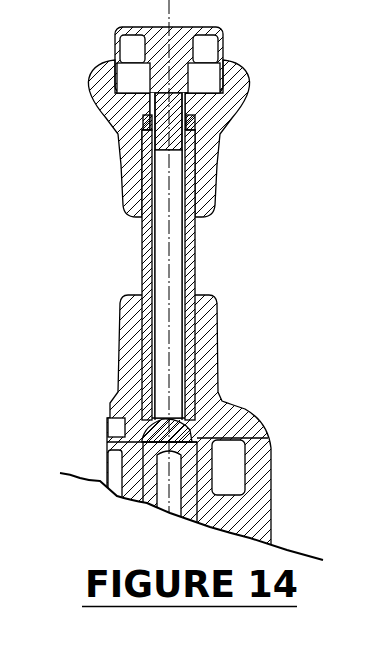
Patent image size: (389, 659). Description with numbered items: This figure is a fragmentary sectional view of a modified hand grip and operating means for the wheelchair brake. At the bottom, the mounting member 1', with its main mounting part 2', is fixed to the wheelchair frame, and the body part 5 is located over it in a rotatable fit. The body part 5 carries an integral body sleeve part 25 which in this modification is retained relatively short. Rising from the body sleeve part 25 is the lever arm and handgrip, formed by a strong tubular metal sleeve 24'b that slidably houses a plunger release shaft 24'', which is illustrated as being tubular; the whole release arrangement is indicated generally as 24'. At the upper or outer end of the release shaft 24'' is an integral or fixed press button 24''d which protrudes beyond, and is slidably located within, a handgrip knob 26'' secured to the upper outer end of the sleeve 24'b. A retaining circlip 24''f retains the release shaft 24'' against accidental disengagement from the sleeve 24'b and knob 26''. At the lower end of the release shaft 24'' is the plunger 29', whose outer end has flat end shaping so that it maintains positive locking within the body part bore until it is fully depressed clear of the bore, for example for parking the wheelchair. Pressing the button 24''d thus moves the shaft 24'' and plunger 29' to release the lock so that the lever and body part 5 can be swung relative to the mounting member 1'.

The press button 24''d is at (231, 60).
The handgrip knob 26'' is at (211, 138).
The plunger release shaft 24'' is at (238, 275).
The tubular metal sleeve 24'b is at (246, 256).
The body sleeve part 25 is at (213, 310).
The plunger 29' is at (237, 403).
The body part 5 is at (271, 444).
The main mounting part 2' is at (237, 501).
The retaining circlip 24''f is at (104, 124).
The plunger release assembly 24' is at (108, 255).
The mounting member 1' is at (73, 440).